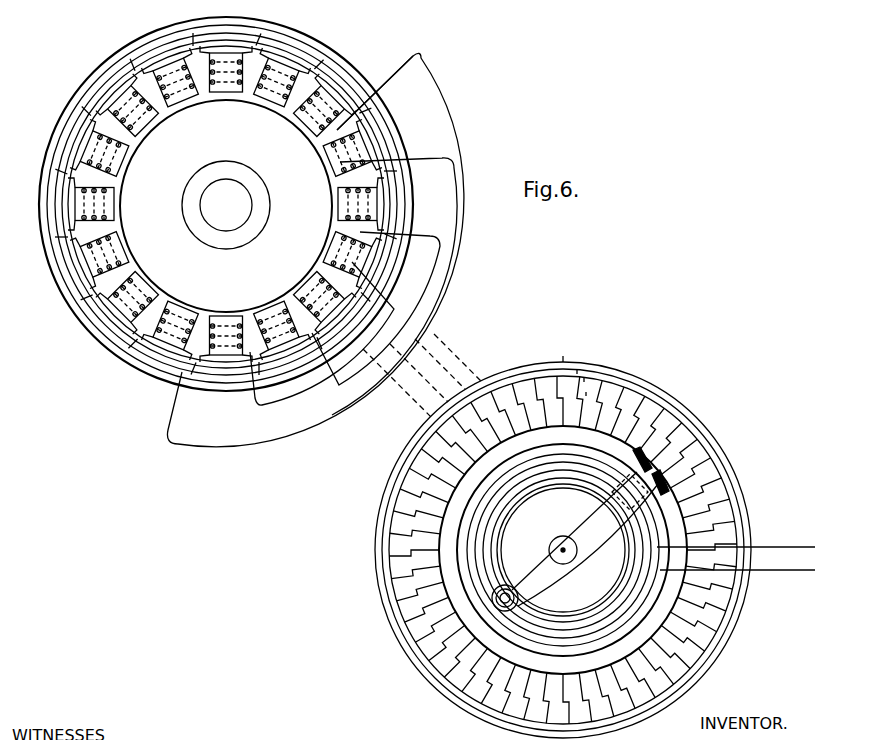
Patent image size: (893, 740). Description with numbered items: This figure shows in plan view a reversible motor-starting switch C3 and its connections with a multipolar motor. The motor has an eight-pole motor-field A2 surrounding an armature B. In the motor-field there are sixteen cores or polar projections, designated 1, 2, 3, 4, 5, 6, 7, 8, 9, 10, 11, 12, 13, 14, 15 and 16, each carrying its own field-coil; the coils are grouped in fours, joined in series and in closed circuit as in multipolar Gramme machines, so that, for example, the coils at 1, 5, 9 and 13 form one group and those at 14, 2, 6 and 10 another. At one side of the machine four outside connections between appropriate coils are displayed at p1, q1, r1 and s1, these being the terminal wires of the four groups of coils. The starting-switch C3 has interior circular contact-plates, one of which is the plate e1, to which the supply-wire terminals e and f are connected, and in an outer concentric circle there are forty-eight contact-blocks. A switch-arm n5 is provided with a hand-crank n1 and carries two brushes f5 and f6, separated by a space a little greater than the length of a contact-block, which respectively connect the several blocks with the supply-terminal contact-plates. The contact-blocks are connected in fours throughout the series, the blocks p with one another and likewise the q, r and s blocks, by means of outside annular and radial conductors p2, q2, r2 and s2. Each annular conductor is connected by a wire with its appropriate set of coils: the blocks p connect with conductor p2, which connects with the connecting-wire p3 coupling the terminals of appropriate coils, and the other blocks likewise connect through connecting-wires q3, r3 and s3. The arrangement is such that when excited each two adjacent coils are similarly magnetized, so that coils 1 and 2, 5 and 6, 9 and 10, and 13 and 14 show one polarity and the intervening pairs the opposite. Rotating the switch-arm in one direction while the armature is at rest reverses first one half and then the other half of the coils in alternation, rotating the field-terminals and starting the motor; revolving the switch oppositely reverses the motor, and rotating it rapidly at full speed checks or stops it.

The core or polar projection 1 is at (306, 124).
The core or polar projection 2 is at (270, 100).
The core or polar projection 3 is at (226, 92).
The core or polar projection 4 is at (182, 100).
The core or polar projection 5 is at (147, 125).
The core or polar projection 6 is at (123, 162).
The core or polar projection 7 is at (114, 204).
The core or polar projection 8 is at (132, 243).
The core or polar projection 9 is at (154, 276).
The core or polar projection 10 is at (187, 298).
The core or polar projection 11 is at (226, 316).
The core or polar projection 12 is at (270, 308).
The core or polar projection 13 is at (305, 283).
The core or polar projection 14 is at (329, 246).
The core or polar projection 15 is at (338, 204).
The core or polar projection 16 is at (329, 162).
The armature B is at (226, 217).
The motor-field A2 is at (226, 204).
The contact-block p is at (315, 249).
The terminal wire p1 is at (384, 93).
The terminal wire q1 is at (394, 286).
The terminal wire r1 is at (376, 317).
The terminal wire s1 is at (329, 342).
The connecting-wire p3 is at (457, 357).
The connecting-wire q3 is at (440, 364).
The connecting-wire r3 is at (419, 373).
The connecting-wire s3 is at (397, 383).
The reversible starting-switch C3 is at (575, 550).
The annular and radial conductor p2 is at (559, 353).
The annular and radial conductor q2 is at (573, 366).
The annular and radial conductor r2 is at (581, 380).
The annular and radial conductor s2 is at (583, 393).
The interior circular contact-plate e1 is at (563, 550).
The switch-arm n5 is at (585, 539).
The hand-crank n1 is at (512, 590).
The brush f5 is at (645, 460).
The brush f6 is at (664, 485).
The supply-wire terminal f is at (736, 538).
The supply-wire terminal e is at (737, 562).